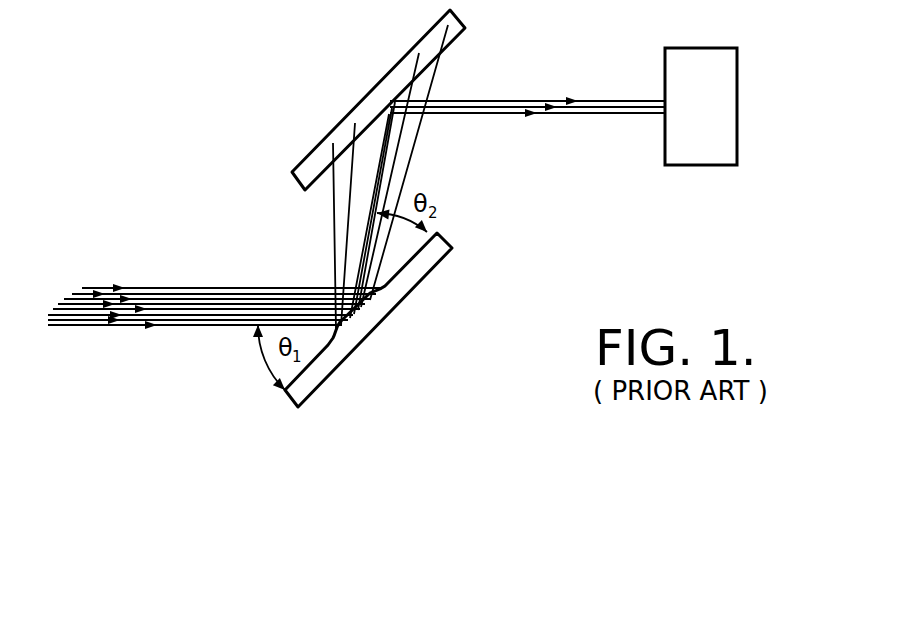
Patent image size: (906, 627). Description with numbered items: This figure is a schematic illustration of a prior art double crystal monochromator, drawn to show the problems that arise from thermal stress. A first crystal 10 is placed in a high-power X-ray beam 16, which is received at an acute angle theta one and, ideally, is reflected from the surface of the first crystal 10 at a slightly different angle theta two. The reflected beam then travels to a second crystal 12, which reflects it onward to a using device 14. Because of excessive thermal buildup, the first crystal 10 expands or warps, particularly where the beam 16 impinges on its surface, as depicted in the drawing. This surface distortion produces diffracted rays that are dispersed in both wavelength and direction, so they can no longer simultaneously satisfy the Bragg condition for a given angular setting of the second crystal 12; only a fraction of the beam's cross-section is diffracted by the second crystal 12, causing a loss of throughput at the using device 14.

The first crystal 10 is at (355, 352).
The second crystal 12 is at (348, 113).
The using device 14 is at (737, 68).
The high-power X-ray beam 16 is at (196, 288).